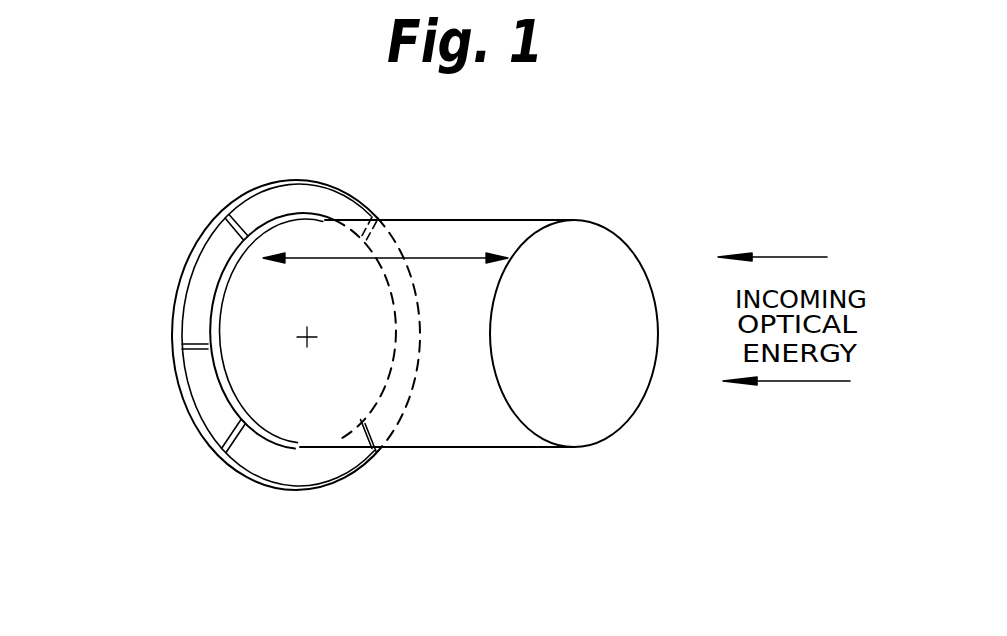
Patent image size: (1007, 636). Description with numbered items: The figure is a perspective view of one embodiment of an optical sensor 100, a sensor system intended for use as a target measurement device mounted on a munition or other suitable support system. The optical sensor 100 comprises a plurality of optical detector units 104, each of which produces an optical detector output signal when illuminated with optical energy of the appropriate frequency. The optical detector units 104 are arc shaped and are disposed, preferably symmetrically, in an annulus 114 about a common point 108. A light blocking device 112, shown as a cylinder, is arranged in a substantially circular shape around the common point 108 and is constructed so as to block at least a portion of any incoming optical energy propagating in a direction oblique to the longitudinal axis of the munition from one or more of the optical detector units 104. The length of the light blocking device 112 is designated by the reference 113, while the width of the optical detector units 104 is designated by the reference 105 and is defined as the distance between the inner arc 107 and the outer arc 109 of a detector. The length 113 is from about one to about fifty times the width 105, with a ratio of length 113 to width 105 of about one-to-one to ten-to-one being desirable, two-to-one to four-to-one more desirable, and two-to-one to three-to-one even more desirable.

The optical sensor 100 is at (386, 511).
The optical detector units 104 is at (305, 200).
The width of the optical detector units 105 is at (198, 374).
The inner arc 107 is at (203, 346).
The common point 108 is at (300, 332).
The outer arc 109 is at (197, 427).
The light blocking device 112 is at (480, 236).
The length of light blocking device 113 is at (440, 258).
The annulus 114 is at (239, 208).